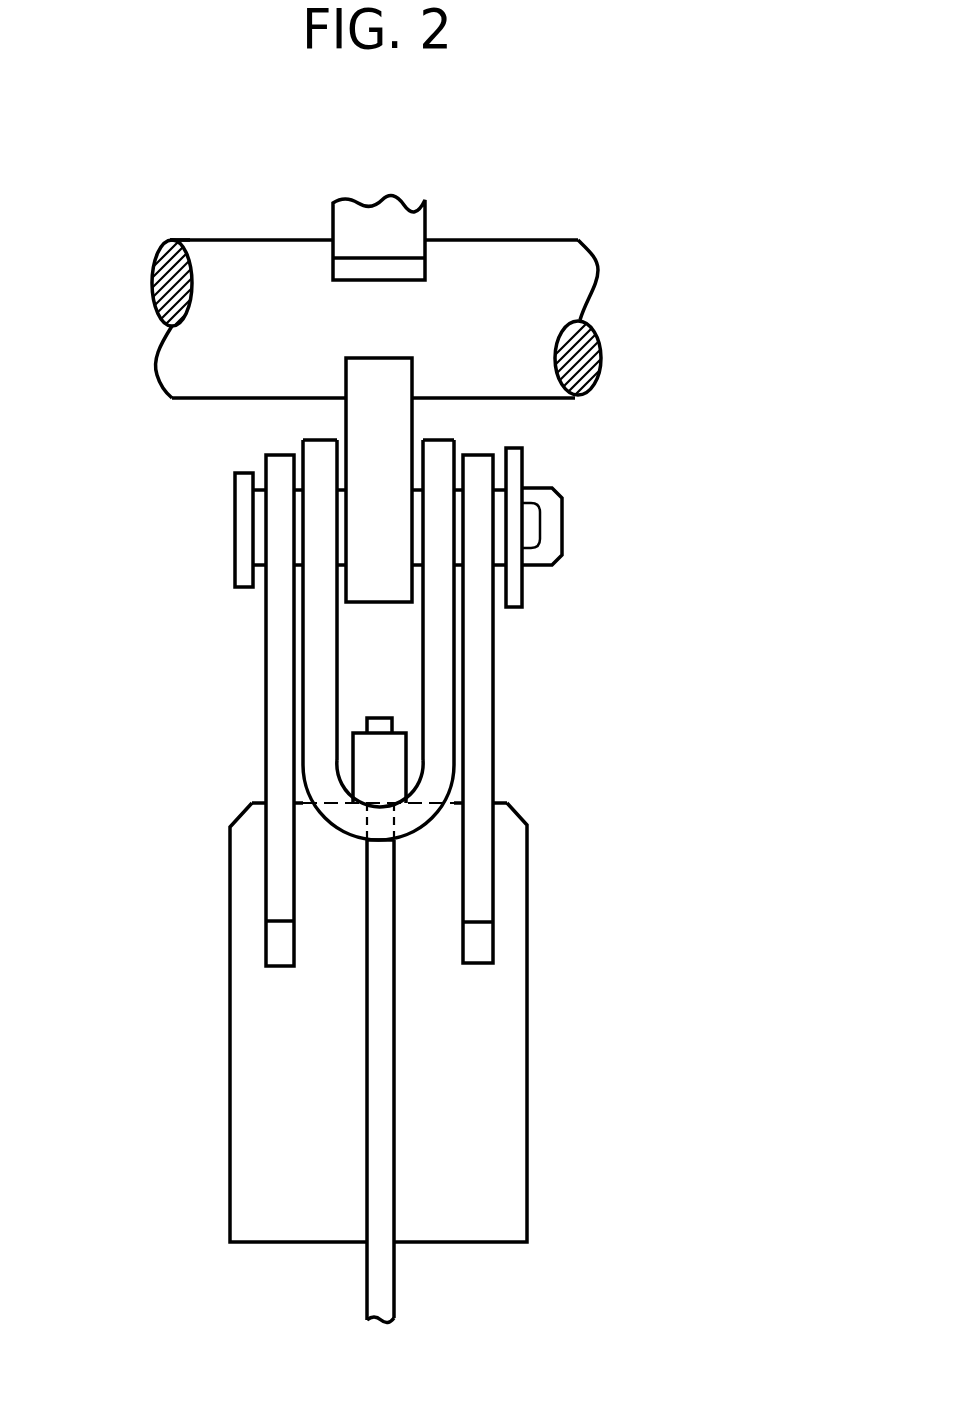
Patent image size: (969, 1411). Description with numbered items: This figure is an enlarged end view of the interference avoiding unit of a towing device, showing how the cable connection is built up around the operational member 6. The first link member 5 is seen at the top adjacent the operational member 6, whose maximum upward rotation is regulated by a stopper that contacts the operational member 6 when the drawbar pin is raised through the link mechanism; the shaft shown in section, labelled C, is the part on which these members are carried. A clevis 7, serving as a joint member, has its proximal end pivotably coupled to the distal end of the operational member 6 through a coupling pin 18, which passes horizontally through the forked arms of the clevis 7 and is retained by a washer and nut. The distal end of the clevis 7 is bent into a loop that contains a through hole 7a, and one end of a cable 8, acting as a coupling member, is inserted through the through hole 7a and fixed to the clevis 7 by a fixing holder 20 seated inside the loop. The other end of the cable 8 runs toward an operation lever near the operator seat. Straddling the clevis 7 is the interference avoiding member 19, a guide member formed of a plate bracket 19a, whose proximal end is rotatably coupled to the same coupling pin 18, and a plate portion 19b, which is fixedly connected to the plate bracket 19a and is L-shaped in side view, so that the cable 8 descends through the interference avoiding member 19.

The shaft / crankshaft C is at (575, 280).
The first link member 5 is at (398, 220).
The operational member 6 is at (390, 413).
The clevis 7 is at (454, 665).
The through hole 7a is at (395, 840).
The cable 8 is at (378, 1171).
The coupling pin 18 is at (247, 540).
The interference avoiding member 19 is at (473, 848).
The plate bracket 19a is at (461, 710).
The plate portion 19b is at (482, 990).
The fixing holder 20 is at (377, 767).